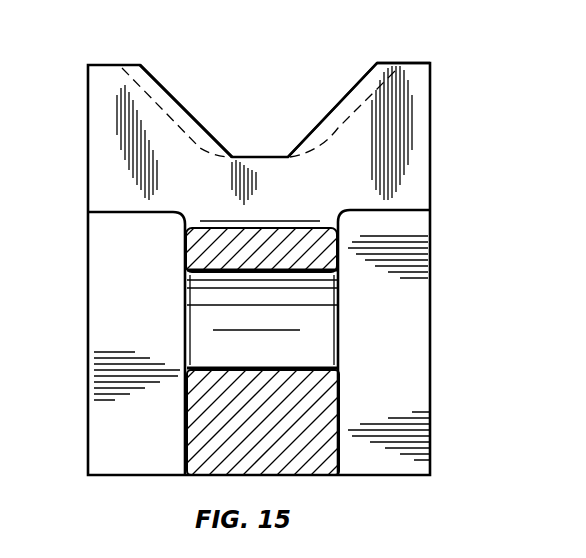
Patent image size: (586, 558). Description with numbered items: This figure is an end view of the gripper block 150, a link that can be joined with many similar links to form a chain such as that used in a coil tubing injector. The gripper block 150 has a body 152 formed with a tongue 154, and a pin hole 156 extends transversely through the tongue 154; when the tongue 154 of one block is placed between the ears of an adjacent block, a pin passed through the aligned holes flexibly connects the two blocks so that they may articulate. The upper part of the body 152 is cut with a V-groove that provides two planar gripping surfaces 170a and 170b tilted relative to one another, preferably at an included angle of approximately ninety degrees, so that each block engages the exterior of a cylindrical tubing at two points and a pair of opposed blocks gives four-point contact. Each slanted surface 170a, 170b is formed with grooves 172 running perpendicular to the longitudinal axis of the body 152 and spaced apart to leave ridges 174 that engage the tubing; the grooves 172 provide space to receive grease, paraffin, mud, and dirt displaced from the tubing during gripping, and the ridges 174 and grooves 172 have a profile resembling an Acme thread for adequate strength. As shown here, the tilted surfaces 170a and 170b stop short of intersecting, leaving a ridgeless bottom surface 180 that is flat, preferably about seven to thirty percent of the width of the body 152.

The gripper block 150 is at (76, 95).
The body 152 is at (88, 323).
The tongue 154 is at (342, 400).
The pin hole 156 is at (310, 275).
The planar surface 170a is at (349, 93).
The planar surface 170b is at (182, 103).
The groove 172 is at (324, 115).
The ridge 174 is at (367, 70).
The ridgeless bottom surface 180 is at (256, 156).